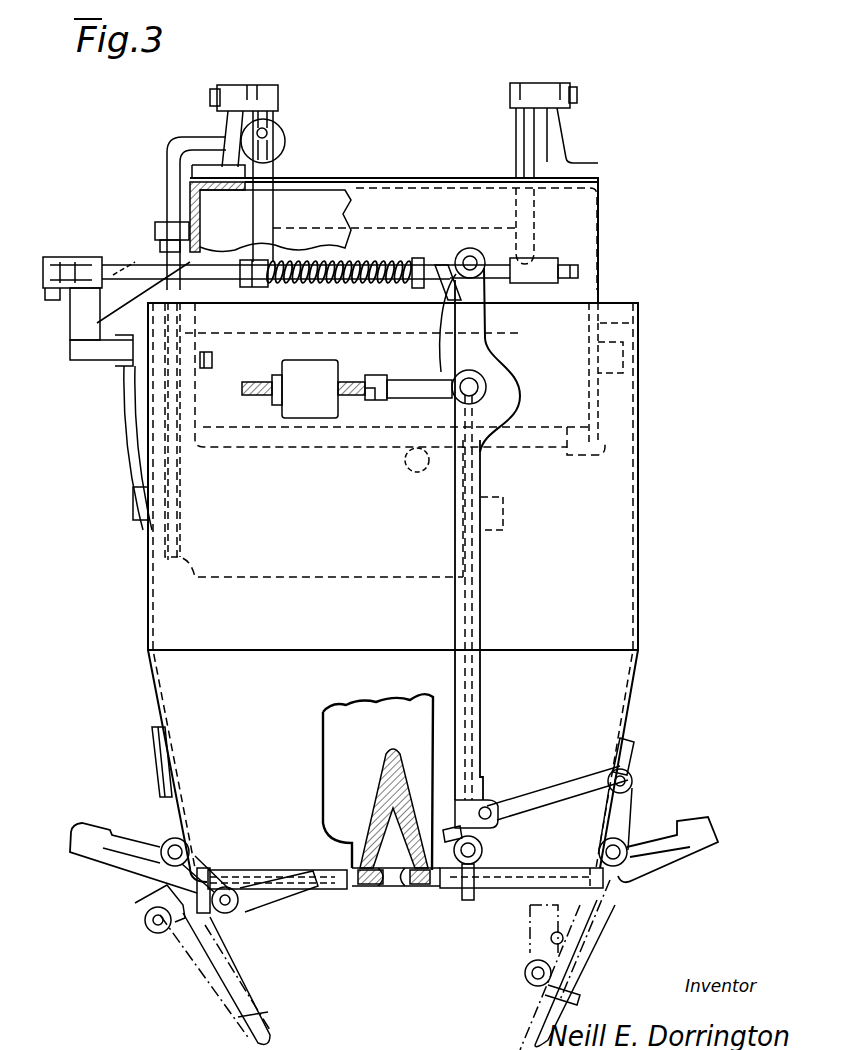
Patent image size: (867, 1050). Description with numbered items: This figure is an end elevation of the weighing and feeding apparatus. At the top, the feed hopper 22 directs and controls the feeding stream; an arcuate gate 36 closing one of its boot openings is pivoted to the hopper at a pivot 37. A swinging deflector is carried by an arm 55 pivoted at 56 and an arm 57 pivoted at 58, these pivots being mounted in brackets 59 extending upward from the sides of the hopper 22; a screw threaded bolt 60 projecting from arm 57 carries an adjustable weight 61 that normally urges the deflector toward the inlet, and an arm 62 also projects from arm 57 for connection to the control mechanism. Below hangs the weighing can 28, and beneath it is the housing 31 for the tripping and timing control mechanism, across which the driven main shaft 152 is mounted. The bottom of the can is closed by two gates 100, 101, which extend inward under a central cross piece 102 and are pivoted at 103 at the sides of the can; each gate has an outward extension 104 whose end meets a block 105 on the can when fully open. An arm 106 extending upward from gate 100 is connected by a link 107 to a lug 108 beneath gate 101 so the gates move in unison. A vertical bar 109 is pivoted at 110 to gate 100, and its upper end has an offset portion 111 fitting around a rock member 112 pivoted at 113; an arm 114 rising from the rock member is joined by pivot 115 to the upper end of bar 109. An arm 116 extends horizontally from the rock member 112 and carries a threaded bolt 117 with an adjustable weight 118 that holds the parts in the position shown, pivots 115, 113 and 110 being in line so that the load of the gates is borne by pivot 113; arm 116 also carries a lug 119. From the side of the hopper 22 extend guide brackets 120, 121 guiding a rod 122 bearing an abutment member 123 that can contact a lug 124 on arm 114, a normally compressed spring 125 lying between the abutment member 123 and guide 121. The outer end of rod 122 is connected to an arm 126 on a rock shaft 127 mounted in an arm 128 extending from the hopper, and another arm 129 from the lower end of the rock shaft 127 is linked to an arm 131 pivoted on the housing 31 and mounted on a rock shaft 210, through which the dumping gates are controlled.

The hopper 22 is at (600, 224).
The weighing can 28 is at (640, 440).
The housing 31 is at (256, 578).
The gate 36 is at (258, 452).
The pivot 37 is at (212, 360).
The arm 55 is at (514, 132).
The pivot 56 is at (578, 96).
The arm 57 is at (274, 214).
The pivot 58 is at (212, 97).
The brackets 59 is at (554, 134).
The screw threaded bolt 60 is at (268, 130).
The weight 61 is at (287, 141).
The arm 62 is at (166, 180).
The gate 100 is at (510, 890).
The gate 101 is at (322, 890).
The central cross piece 102 is at (385, 780).
The pivot 103 is at (605, 845).
The outward extension 104 is at (678, 862).
The block 105 is at (636, 748).
The arm 106 is at (622, 820).
The link 107 is at (542, 800).
The lug 108 is at (228, 914).
The vertical bar 109 is at (482, 722).
The pivot 110 is at (483, 850).
The offset portion 111 is at (500, 410).
The rock member 112 is at (458, 402).
The pivot 113 is at (478, 387).
The arm 114 is at (441, 315).
The pivot 115 is at (459, 252).
The arm 116 is at (420, 380).
The threaded bolt 117 is at (244, 392).
The adjustable weight 118 is at (310, 372).
The lug 119 is at (374, 374).
The guide bracket 120 is at (545, 259).
The guide bracket 121 is at (260, 281).
The rod 122 is at (580, 271).
The abutment member 123 is at (414, 286).
The lug 124 is at (440, 264).
The spring 125 is at (336, 258).
The arm 126 is at (45, 272).
The rock shaft 127 is at (80, 360).
The arm 128 is at (150, 258).
The arm 129 is at (106, 358).
The arm 131 is at (128, 418).
The main shaft 152 is at (416, 474).
The rock shaft 210 is at (133, 508).